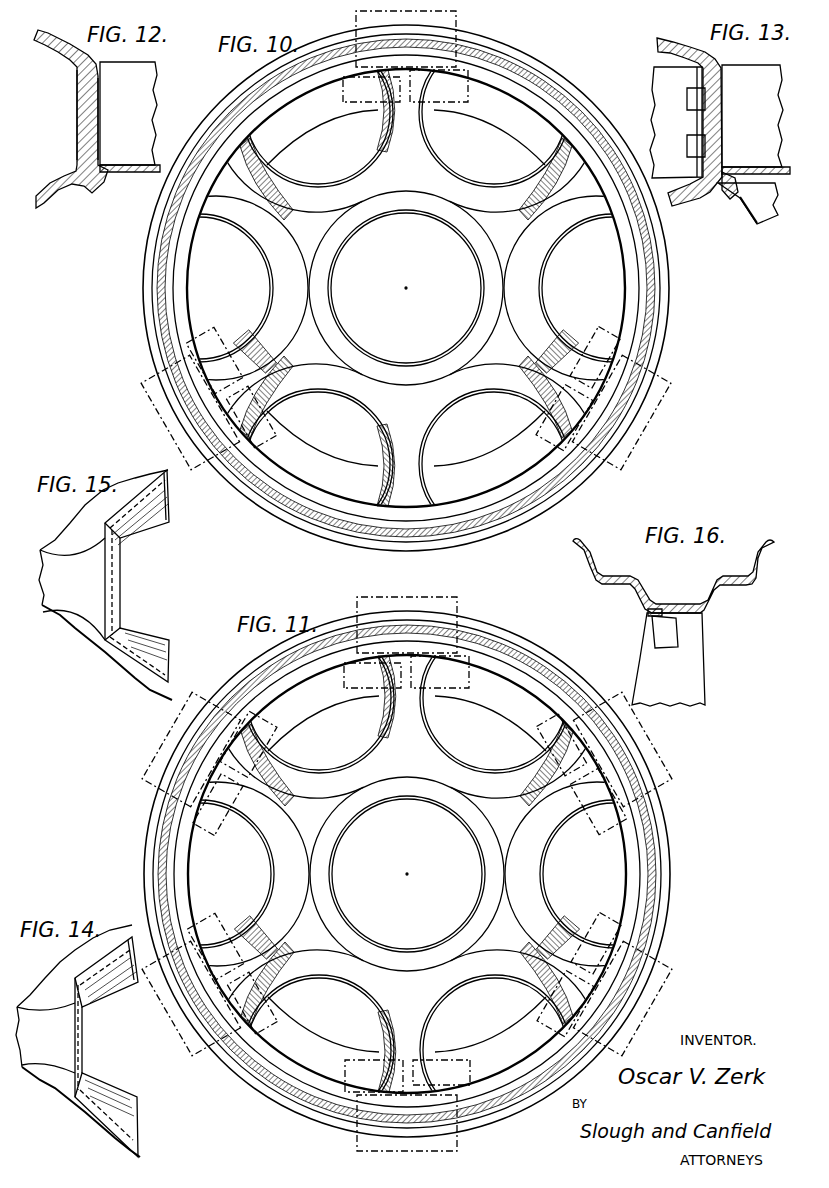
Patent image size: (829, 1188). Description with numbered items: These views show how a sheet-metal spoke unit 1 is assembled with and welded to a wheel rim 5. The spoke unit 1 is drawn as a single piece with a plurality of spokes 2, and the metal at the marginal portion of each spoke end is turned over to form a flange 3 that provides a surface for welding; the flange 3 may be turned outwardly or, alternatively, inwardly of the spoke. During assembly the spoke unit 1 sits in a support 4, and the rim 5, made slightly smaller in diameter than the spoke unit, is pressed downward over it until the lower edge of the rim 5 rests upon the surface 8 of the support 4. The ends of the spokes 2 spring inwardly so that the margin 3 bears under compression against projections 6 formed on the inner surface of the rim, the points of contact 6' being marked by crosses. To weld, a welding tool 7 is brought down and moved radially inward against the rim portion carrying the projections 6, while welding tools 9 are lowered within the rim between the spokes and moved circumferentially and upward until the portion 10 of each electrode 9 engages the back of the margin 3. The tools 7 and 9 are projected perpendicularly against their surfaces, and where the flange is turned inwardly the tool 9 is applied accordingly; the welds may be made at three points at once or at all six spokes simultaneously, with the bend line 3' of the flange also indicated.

In FIG. 10, the spoke unit 1 is at (406, 288).
In FIG. 11, the spoke unit 1 is at (407, 874).
In FIG. 10, the spokes 2 is at (406, 288).
In FIG. 11, the spokes 2 is at (407, 874).
In FIG. 12, the spokes 2 is at (150, 86).
In FIG. 13, the spokes 2 is at (775, 78).
In FIG. 14, the spokes 2 is at (43, 1050).
In FIG. 15, the spokes 2 is at (67, 593).
In FIG. 16, the spokes 2 is at (700, 685).
In FIG. 10, the turned over portion 3 is at (406, 287).
In FIG. 11, the turned over portion 3 is at (407, 874).
In FIG. 12, the turned over portion 3 is at (130, 193).
In FIG. 13, the turned over portion 3 is at (728, 204).
In FIG. 14, the turned over portion 3 is at (106, 1072).
In FIG. 15, the turned over portion 3 is at (137, 602).
In FIG. 16, the turned over portion 3 is at (668, 590).
In FIG. 10, the tab bend line 3' is at (406, 288).
In FIG. 11, the tab bend line 3' is at (407, 874).
In FIG. 10, the support 4 is at (262, 34).
In FIG. 11, the support 4 is at (425, 874).
In FIG. 10, the rim 5 is at (406, 288).
In FIG. 11, the rim 5 is at (407, 874).
In FIG. 12, the rim 5 is at (48, 52).
In FIG. 13, the rim 5 is at (668, 38).
In FIG. 16, the rim 5 is at (600, 583).
In FIG. 10, the projections 6 is at (406, 288).
In FIG. 11, the projections 6 is at (407, 874).
In FIG. 12, the projections 6 is at (103, 147).
In FIG. 14, the points of contact 6' is at (107, 977).
In FIG. 15, the points of contact 6' is at (155, 507).
In FIG. 10, the welding tool 7 is at (399, 257).
In FIG. 11, the welding tool 7 is at (411, 867).
In FIG. 13, the welding tool 7 is at (652, 80).
In FIG. 10, the surface 8 is at (425, 288).
In FIG. 11, the surface 8 is at (429, 874).
In FIG. 10, the welding tools 9 is at (406, 264).
In FIG. 11, the welding tools 9 is at (407, 874).
In FIG. 13, the welding tools 9 is at (763, 207).
In FIG. 16, the welding tools 9 is at (680, 638).
In FIG. 10, the portion of the electrode 10 is at (405, 288).
In FIG. 11, the portion of the electrode 10 is at (406, 874).